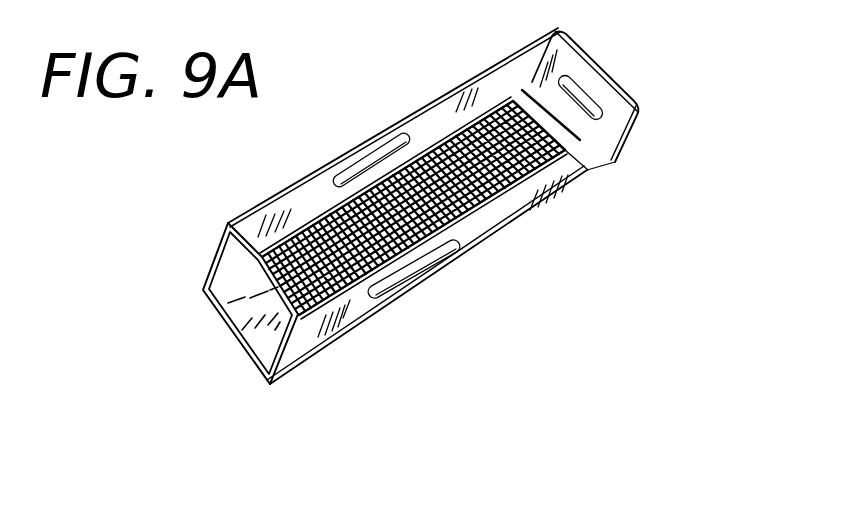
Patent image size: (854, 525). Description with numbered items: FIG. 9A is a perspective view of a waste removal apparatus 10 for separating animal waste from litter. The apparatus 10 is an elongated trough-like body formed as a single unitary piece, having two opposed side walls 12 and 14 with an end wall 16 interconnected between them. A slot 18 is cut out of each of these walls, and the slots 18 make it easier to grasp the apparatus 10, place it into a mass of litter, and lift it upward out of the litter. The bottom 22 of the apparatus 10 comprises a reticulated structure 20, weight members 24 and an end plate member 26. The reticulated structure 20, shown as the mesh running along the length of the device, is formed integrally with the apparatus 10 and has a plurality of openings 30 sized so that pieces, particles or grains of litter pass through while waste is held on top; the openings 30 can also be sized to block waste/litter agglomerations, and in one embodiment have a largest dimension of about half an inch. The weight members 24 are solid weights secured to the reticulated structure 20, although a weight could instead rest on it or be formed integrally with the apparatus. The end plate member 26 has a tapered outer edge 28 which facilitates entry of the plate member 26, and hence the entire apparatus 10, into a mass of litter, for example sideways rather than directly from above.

The waste removal apparatus 10 is at (310, 172).
The side wall 12 is at (480, 87).
The side wall 14 is at (583, 177).
The end wall 16 is at (573, 70).
The slot 18 is at (377, 157).
The reticulated structure 20 is at (495, 195).
The bottom 22 is at (230, 223).
The weight member 24 is at (313, 312).
The end plate member 26 is at (207, 306).
The tapered outer edge 28 is at (224, 333).
The opening 30 is at (437, 160).